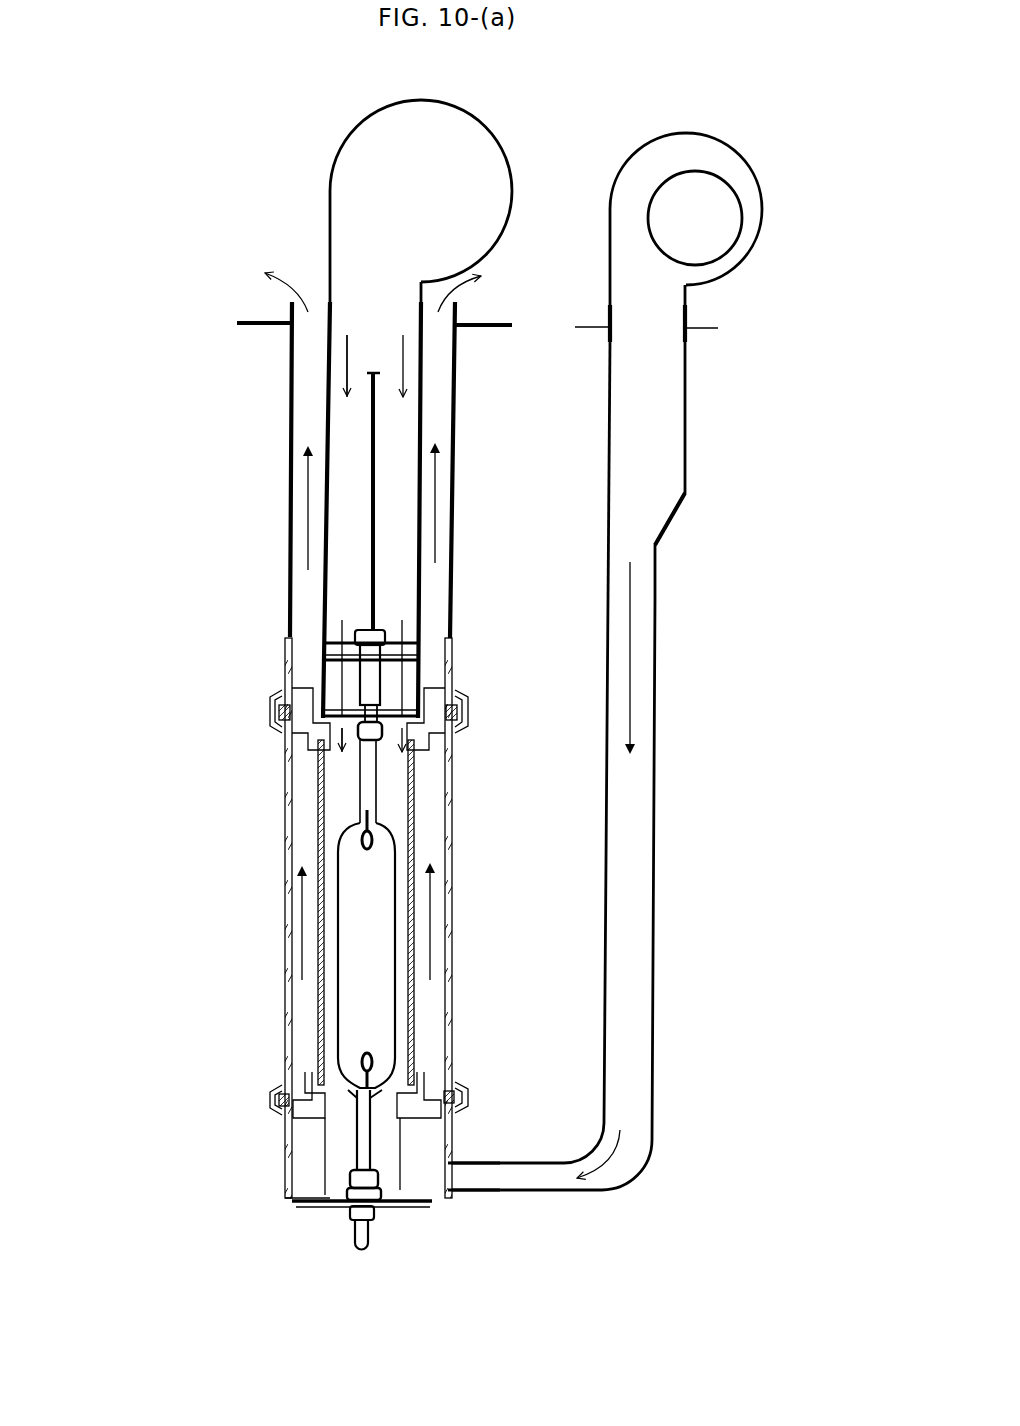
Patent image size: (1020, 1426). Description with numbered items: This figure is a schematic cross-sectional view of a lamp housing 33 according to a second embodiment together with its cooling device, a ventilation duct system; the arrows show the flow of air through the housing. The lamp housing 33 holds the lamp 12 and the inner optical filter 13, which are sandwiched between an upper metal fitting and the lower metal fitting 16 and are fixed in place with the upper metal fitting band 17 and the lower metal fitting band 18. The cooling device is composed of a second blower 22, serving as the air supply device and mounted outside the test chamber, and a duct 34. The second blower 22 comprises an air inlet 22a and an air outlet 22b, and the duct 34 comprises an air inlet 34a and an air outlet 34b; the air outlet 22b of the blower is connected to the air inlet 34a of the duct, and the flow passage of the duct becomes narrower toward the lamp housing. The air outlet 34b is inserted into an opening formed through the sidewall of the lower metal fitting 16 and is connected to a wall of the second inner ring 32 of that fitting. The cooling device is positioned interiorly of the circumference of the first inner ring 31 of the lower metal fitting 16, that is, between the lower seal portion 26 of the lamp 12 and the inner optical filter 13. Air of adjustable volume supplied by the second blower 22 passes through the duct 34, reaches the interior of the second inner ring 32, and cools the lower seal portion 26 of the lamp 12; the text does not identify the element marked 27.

The lamp housing 33 is at (162, 118).
The second blower 22 is at (700, 135).
The air inlet 22a is at (712, 207).
The air outlet 22b is at (643, 332).
The air inlet 34a is at (660, 415).
The duct 34 is at (655, 660).
The air outlet 34b is at (432, 1173).
The lamp 12 is at (367, 927).
The inner optical filter 13 is at (317, 963).
The lower metal fitting 16 is at (285, 1150).
The upper metal fitting band 17 is at (470, 698).
The lower metal fitting band 18 is at (458, 1083).
The lower seal portion 26 is at (367, 1155).
The base 27 is at (500, 1210).
The first inner ring 31 is at (305, 1085).
The second inner ring 32 is at (325, 1155).